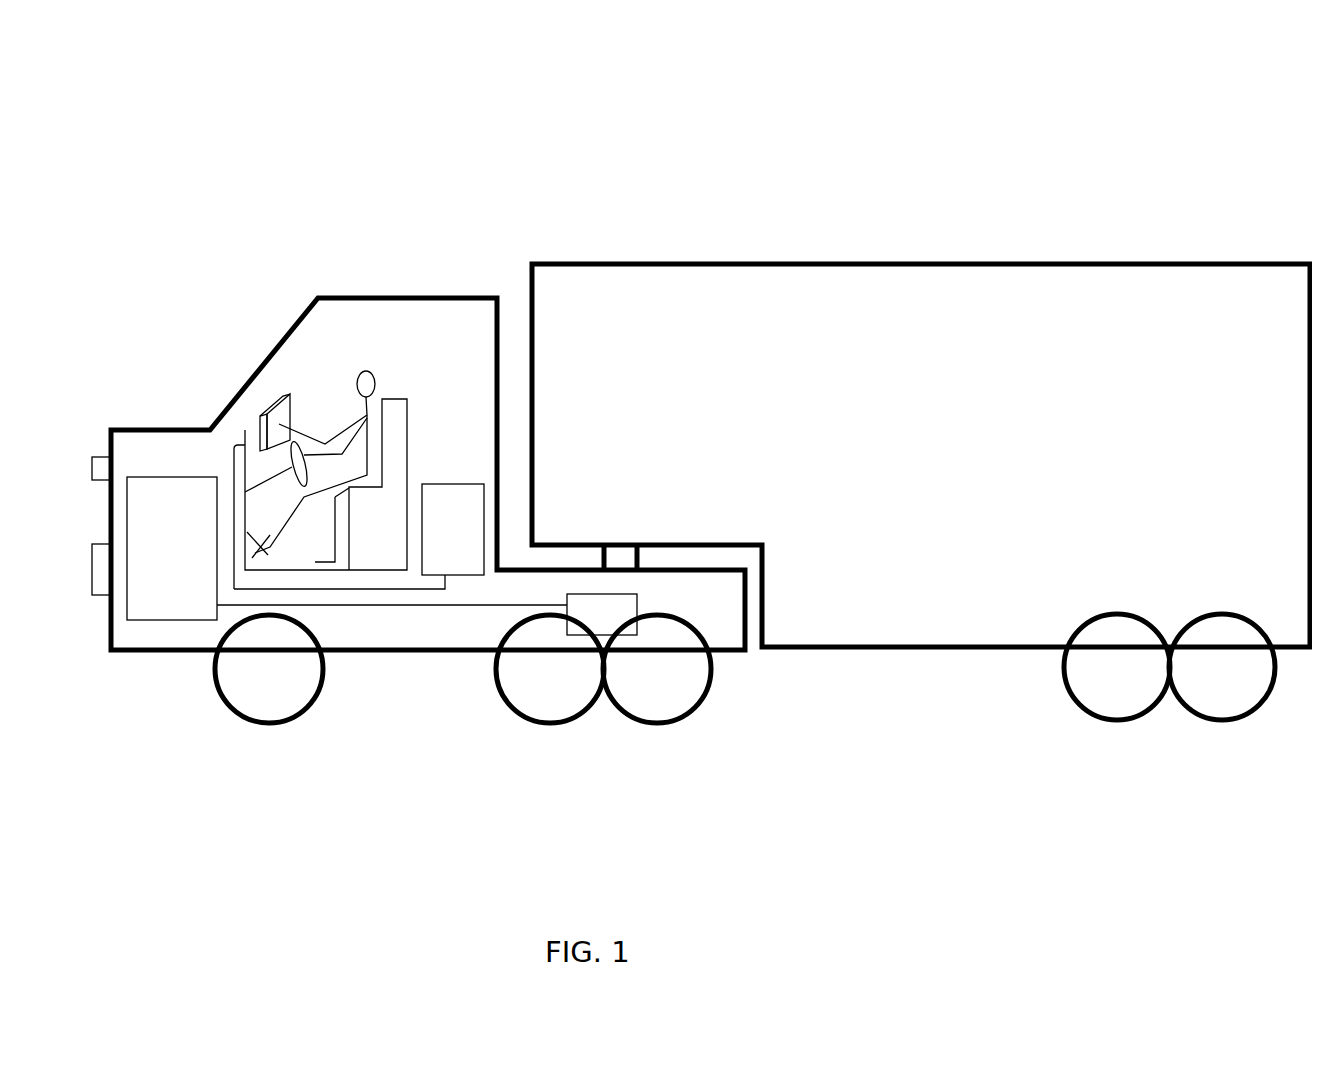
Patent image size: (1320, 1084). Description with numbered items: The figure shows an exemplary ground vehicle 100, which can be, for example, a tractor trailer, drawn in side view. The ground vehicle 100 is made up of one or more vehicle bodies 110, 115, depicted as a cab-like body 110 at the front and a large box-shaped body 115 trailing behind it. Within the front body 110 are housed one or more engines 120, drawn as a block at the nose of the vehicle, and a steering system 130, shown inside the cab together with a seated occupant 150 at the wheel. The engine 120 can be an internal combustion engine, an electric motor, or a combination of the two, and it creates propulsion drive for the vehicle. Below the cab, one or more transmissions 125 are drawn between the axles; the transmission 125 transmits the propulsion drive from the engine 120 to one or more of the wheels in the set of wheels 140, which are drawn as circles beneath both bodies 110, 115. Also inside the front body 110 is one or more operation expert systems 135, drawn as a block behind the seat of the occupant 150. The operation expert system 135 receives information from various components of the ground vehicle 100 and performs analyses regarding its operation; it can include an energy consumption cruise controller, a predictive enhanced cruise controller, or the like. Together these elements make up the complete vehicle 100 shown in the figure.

The ground vehicle 100 is at (1282, 62).
The vehicle body 110 is at (377, 292).
The vehicle body 115 is at (930, 409).
The engine 120 is at (153, 554).
The transmission 125 is at (583, 623).
The steering system 130 is at (288, 467).
The operation expert system 135 is at (434, 536).
The set of wheels 140 is at (617, 713).
The driver 150 is at (370, 360).